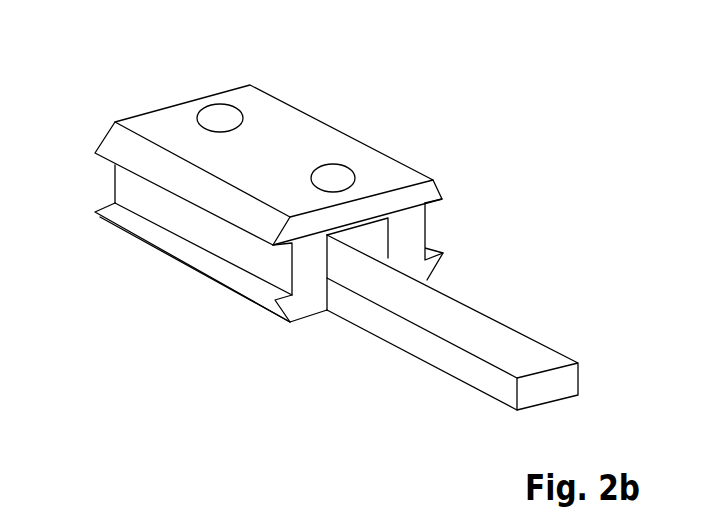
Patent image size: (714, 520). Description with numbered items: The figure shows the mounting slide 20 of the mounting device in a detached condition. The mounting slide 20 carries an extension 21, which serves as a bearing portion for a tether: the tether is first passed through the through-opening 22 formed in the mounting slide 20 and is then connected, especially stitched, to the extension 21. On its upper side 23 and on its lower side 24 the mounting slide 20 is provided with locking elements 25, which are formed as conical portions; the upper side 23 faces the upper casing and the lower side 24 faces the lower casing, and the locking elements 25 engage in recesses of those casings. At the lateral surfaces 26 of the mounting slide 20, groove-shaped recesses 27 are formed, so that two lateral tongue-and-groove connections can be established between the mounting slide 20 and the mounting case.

The mounting slide 20 is at (314, 209).
The extension 21 is at (538, 357).
The through-opening 22 is at (373, 237).
The upper side 23 is at (287, 128).
The lower side 24 is at (290, 323).
The locking elements 25 is at (223, 116).
The lateral surfaces 26 is at (112, 147).
The groove-shaped recesses 27 is at (248, 258).